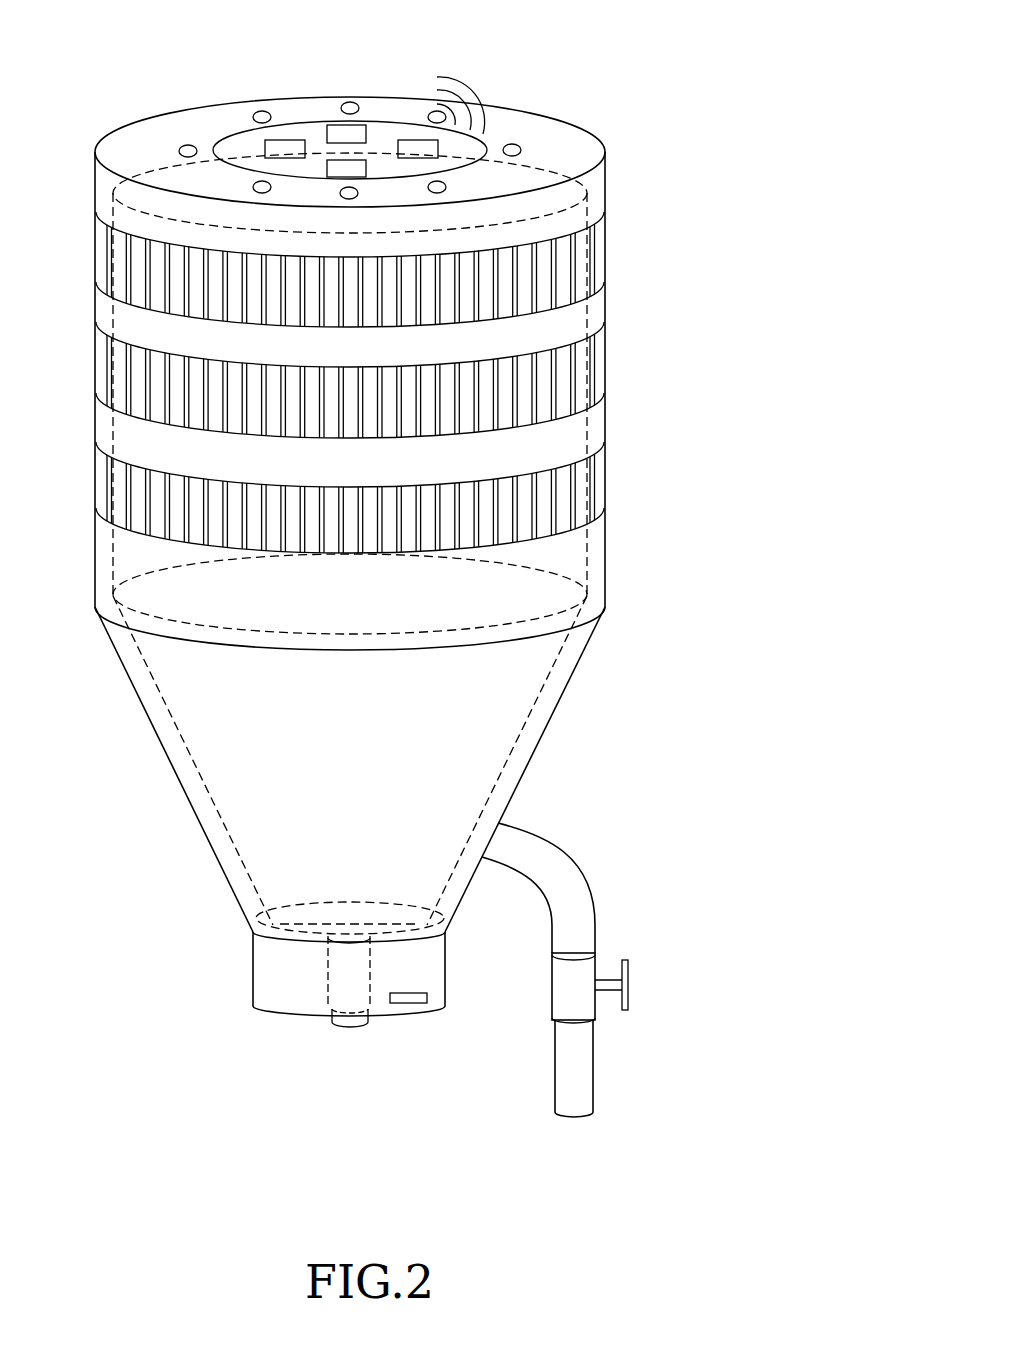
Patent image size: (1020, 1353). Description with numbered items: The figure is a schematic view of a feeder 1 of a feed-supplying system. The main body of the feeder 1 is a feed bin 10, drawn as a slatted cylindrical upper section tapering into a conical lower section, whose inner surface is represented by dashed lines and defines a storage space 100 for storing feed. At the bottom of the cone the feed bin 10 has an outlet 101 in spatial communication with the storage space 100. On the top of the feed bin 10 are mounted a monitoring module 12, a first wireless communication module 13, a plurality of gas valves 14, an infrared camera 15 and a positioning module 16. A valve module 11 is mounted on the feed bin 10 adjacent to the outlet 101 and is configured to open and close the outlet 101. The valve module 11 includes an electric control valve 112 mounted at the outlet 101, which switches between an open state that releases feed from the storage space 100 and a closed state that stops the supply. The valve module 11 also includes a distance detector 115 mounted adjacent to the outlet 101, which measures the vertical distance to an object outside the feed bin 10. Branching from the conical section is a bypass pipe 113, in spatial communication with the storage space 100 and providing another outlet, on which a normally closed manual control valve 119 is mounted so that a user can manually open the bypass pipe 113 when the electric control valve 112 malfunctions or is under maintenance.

The feeder 1 is at (650, 440).
The feed bin 10 is at (607, 297).
The storage space 100 is at (525, 670).
The outlet 101 is at (345, 905).
The valve module 11 is at (231, 984).
The electric control valve 112 is at (333, 977).
The bypass pipe 113 is at (596, 1073).
The distance detector 115 is at (410, 1007).
The manual control valve 119 is at (572, 968).
The monitoring module 12 is at (290, 148).
The first wireless communication module 13 is at (412, 148).
The gas valves 14 is at (345, 100).
The infrared camera 15 is at (345, 135).
The positioning module 16 is at (360, 168).